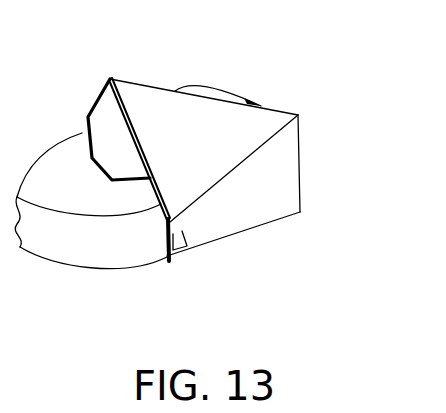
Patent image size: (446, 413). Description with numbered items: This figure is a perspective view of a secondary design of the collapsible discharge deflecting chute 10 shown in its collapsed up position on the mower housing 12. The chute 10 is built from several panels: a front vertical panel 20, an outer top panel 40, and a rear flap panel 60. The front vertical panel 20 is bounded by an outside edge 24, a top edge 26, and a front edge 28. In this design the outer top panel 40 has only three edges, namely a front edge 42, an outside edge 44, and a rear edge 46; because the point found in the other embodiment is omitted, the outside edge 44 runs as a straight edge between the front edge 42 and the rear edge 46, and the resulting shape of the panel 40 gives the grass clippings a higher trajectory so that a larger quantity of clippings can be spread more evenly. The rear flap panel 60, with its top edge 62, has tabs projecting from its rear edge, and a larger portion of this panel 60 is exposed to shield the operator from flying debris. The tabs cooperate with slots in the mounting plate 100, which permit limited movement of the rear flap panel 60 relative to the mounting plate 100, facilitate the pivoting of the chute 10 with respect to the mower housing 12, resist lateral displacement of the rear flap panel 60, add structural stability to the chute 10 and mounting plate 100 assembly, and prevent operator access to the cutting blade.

The collapsible discharge deflecting chute 10 is at (287, 101).
The mower housing 12 is at (110, 250).
The front vertical panel 20 is at (255, 215).
The outside edge 24 is at (177, 228).
The top edge 26 is at (266, 141).
The front edge 28 is at (301, 166).
The outer top panel 40 is at (213, 126).
The front edge 42 is at (252, 153).
The outside edge 44 is at (123, 114).
The rear edge 46 is at (136, 88).
The rear flap panel 60 is at (128, 155).
The top edge 62 is at (258, 227).
The mounting plate 100 is at (173, 274).